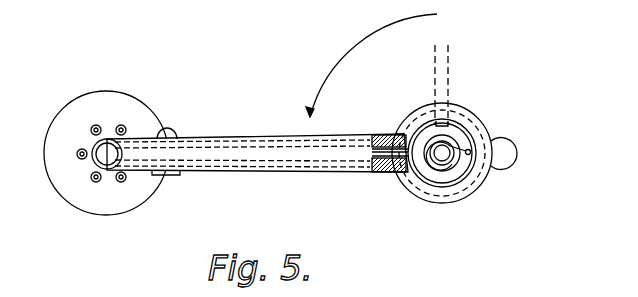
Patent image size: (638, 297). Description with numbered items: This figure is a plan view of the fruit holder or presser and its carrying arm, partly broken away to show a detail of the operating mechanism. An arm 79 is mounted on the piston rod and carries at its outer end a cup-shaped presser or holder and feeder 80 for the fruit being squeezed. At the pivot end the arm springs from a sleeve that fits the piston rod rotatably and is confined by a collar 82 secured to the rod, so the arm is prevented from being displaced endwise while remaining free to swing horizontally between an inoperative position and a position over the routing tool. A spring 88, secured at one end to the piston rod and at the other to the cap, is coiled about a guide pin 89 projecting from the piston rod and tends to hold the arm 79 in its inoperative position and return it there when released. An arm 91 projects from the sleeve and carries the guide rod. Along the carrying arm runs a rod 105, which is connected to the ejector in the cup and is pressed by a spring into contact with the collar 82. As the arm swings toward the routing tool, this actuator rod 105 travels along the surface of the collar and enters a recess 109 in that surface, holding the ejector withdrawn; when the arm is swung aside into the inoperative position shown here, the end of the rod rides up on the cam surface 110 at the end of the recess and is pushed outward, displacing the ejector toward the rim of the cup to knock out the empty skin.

The arm 79 is at (207, 166).
The cup-shaped presser or holder and feeder 80 is at (72, 187).
The collar 82 is at (437, 173).
The spring 88 is at (467, 150).
The guide pin 89 is at (450, 160).
The arm 91 is at (503, 151).
The rod 105 is at (377, 172).
The recess 109 is at (425, 120).
The cam surface 110 is at (400, 132).